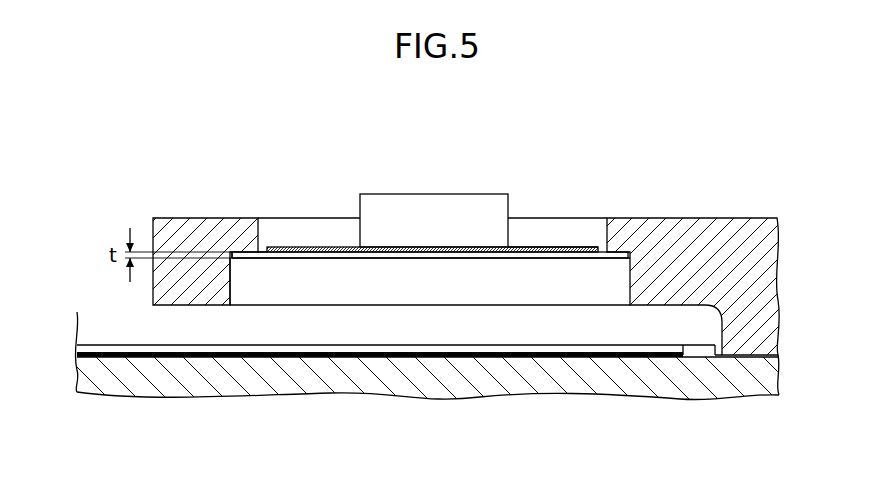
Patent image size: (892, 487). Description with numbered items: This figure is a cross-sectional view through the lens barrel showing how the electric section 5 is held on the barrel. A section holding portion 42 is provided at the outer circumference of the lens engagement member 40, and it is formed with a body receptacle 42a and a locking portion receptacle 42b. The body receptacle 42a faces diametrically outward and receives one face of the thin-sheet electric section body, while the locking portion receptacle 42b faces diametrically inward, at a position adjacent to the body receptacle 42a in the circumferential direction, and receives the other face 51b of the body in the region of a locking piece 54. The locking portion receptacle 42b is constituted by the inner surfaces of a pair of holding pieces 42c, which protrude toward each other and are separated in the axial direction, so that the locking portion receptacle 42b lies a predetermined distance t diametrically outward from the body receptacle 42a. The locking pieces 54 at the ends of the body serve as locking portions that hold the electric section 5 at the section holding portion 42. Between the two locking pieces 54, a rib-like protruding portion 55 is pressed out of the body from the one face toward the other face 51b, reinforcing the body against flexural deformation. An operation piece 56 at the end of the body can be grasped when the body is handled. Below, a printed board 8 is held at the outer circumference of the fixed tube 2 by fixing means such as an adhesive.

The fixed tube 2 is at (517, 382).
The printed board 8 is at (423, 349).
The electric section 5 is at (525, 243).
The lens engagement member 40 is at (735, 217).
The section holding portion 42 is at (635, 123).
The body receptacle 42a is at (580, 257).
The locking portion receptacle 42b is at (266, 262).
The holding pieces 42c is at (247, 216).
The other face 51b is at (263, 250).
The locking piece 54 is at (247, 252).
The rib-like protruding portion 55 is at (542, 245).
The operation piece 56 is at (445, 208).